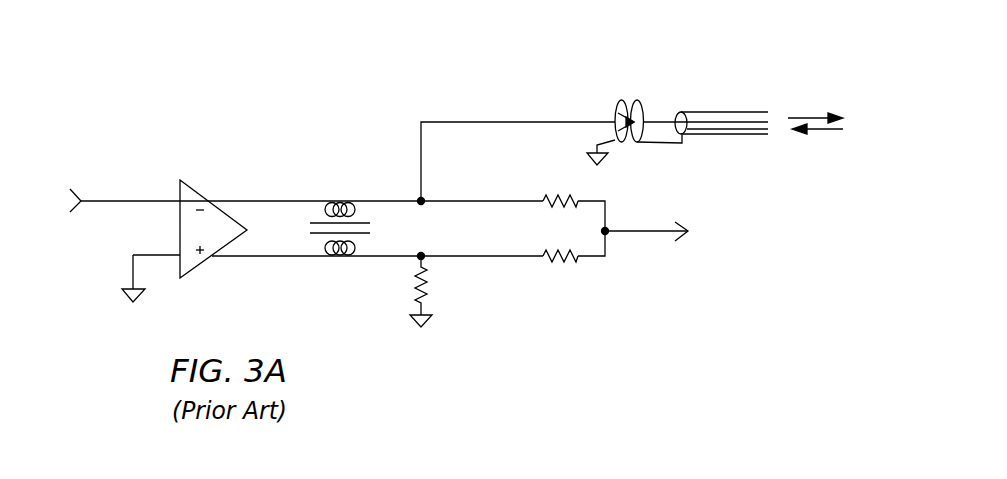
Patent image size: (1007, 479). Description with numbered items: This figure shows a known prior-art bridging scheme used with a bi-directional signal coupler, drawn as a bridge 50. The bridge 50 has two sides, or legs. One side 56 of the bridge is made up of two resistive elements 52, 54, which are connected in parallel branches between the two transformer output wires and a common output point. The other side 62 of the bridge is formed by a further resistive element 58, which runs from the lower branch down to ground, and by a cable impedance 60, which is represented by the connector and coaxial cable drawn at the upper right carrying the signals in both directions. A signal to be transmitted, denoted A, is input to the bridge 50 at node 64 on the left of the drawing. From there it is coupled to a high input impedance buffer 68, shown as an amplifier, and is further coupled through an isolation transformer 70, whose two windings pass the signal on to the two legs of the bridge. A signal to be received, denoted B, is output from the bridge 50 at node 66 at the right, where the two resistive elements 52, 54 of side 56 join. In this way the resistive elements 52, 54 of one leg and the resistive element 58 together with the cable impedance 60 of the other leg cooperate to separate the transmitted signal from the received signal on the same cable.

The bridge 50 is at (510, 72).
The resistive element 52 is at (545, 197).
The resistive element 54 is at (547, 262).
The side of the bridge 56 is at (533, 297).
The resistive element 58 is at (428, 303).
The cable impedance 60 is at (755, 112).
The other side of the bridge 62 is at (393, 139).
The node 64 is at (77, 193).
The node 66 is at (685, 218).
The high input impedance buffer 68 is at (197, 183).
The isolation transformer 70 is at (318, 235).